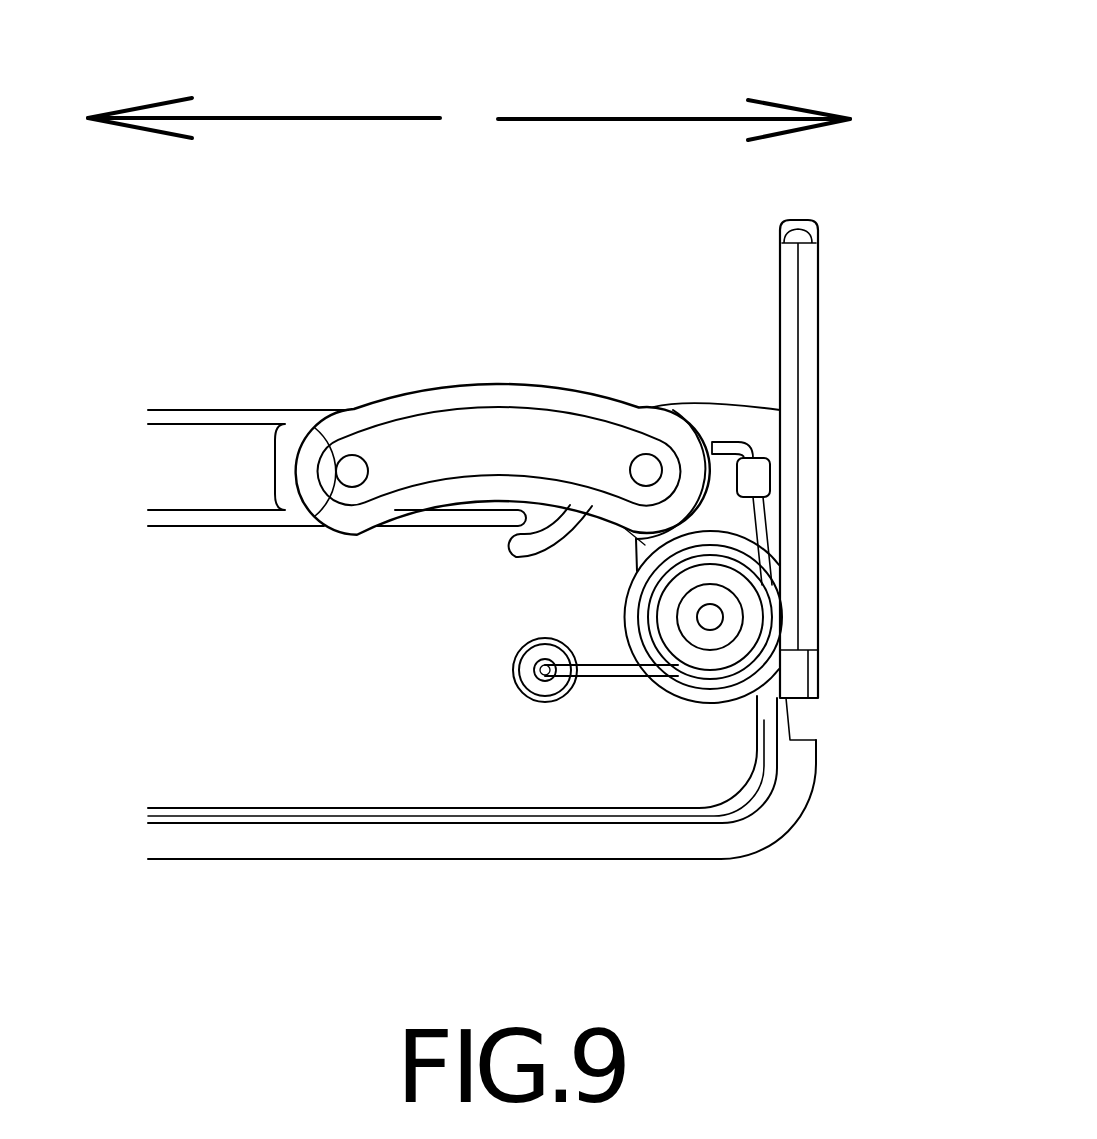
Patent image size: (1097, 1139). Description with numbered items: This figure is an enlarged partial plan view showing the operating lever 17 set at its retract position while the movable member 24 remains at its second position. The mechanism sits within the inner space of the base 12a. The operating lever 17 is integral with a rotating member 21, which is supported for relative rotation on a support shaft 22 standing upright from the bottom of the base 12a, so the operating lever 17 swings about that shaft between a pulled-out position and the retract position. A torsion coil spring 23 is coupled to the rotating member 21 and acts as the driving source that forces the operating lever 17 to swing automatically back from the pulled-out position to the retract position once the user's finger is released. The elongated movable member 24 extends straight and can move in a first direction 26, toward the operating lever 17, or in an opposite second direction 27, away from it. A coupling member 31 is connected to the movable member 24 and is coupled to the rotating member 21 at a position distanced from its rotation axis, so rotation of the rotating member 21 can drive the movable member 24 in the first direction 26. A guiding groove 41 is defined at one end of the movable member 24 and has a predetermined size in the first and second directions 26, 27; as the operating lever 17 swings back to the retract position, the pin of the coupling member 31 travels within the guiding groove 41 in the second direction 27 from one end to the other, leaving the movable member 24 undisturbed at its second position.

The base 12a is at (777, 840).
The operating lever 17 is at (849, 480).
The rotating member 21 is at (727, 709).
The support shaft 22 is at (672, 623).
The torsion coil spring 23 is at (625, 680).
The movable member 24 is at (232, 409).
The first direction 26 is at (598, 118).
The second direction 27 is at (267, 117).
The coupling member 31 is at (407, 393).
The guiding groove 41 is at (468, 510).